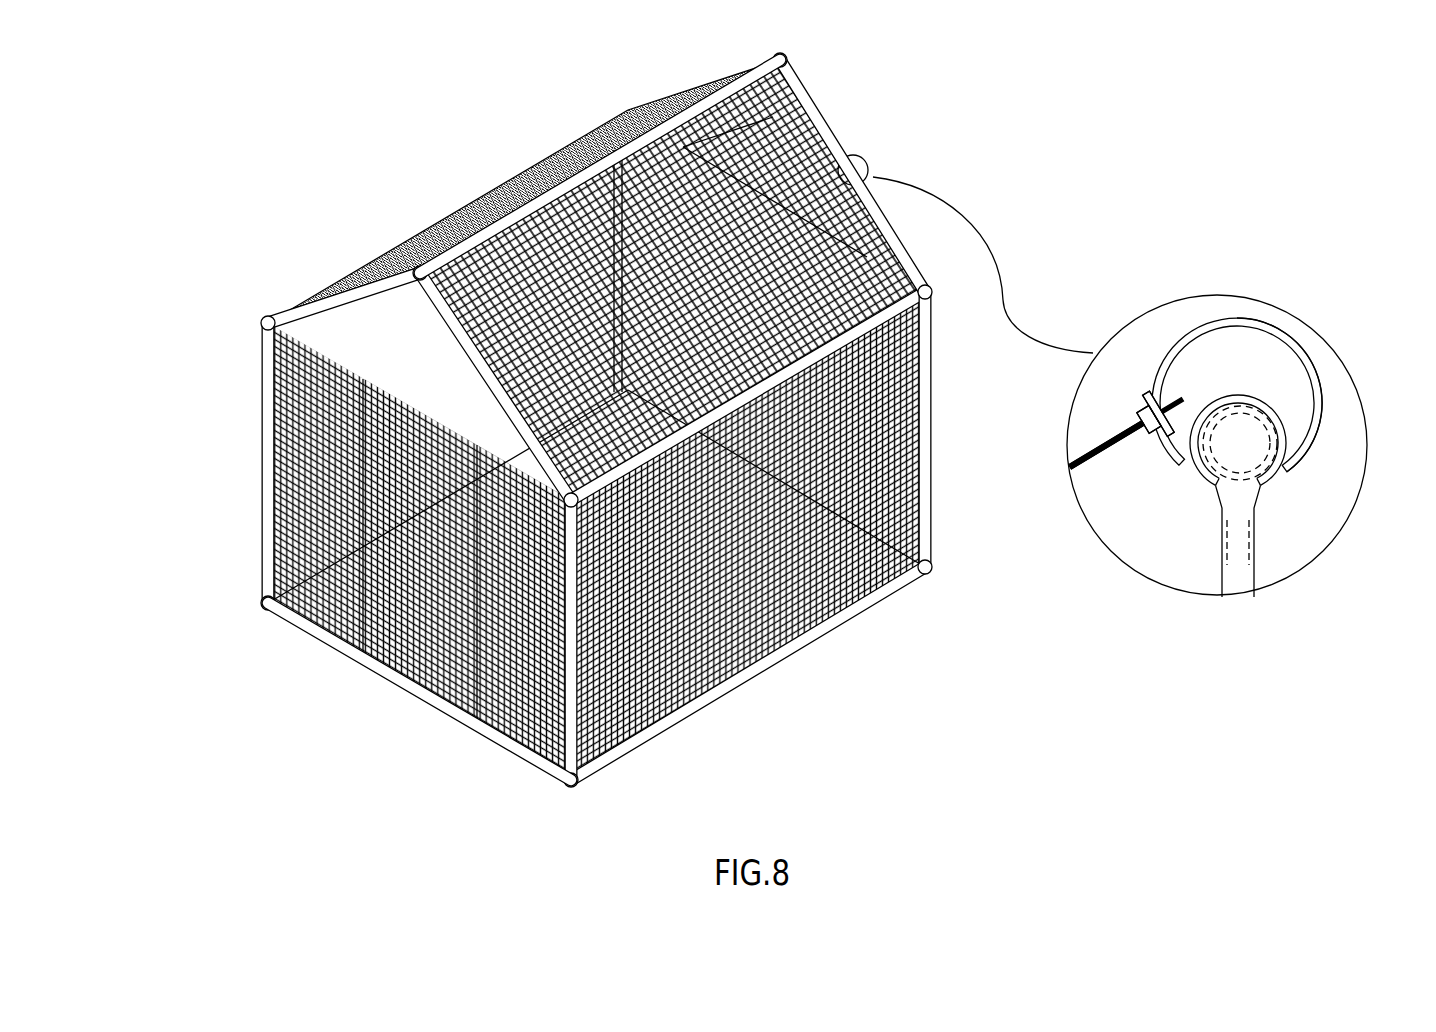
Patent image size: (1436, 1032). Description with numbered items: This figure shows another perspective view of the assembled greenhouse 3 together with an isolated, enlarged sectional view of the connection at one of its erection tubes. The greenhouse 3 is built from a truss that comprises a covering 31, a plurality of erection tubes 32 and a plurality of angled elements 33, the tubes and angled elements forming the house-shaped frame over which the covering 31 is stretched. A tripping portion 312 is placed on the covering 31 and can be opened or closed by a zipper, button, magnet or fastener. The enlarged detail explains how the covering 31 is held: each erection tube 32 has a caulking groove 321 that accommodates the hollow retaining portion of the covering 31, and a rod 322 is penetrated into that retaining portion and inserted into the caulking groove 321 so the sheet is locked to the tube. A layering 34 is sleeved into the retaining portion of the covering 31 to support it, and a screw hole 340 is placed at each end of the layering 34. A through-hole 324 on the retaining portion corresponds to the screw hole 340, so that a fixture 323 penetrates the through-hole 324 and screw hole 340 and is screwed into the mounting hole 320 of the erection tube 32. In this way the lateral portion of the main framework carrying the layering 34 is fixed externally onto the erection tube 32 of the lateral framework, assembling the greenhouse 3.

The greenhouse 3 is at (843, 706).
The covering 31 is at (267, 455).
The erection tube 32 is at (267, 527).
The angled element 33 is at (412, 278).
The tripping portion 312 is at (350, 630).
The mounting hole 320 is at (1170, 410).
The caulking groove 321 is at (1283, 410).
The rod 322 is at (1273, 460).
The fixture 323 is at (1140, 463).
The through-hole 324 is at (1163, 480).
The layering 34 is at (1147, 420).
The screw hole 340 is at (1175, 482).